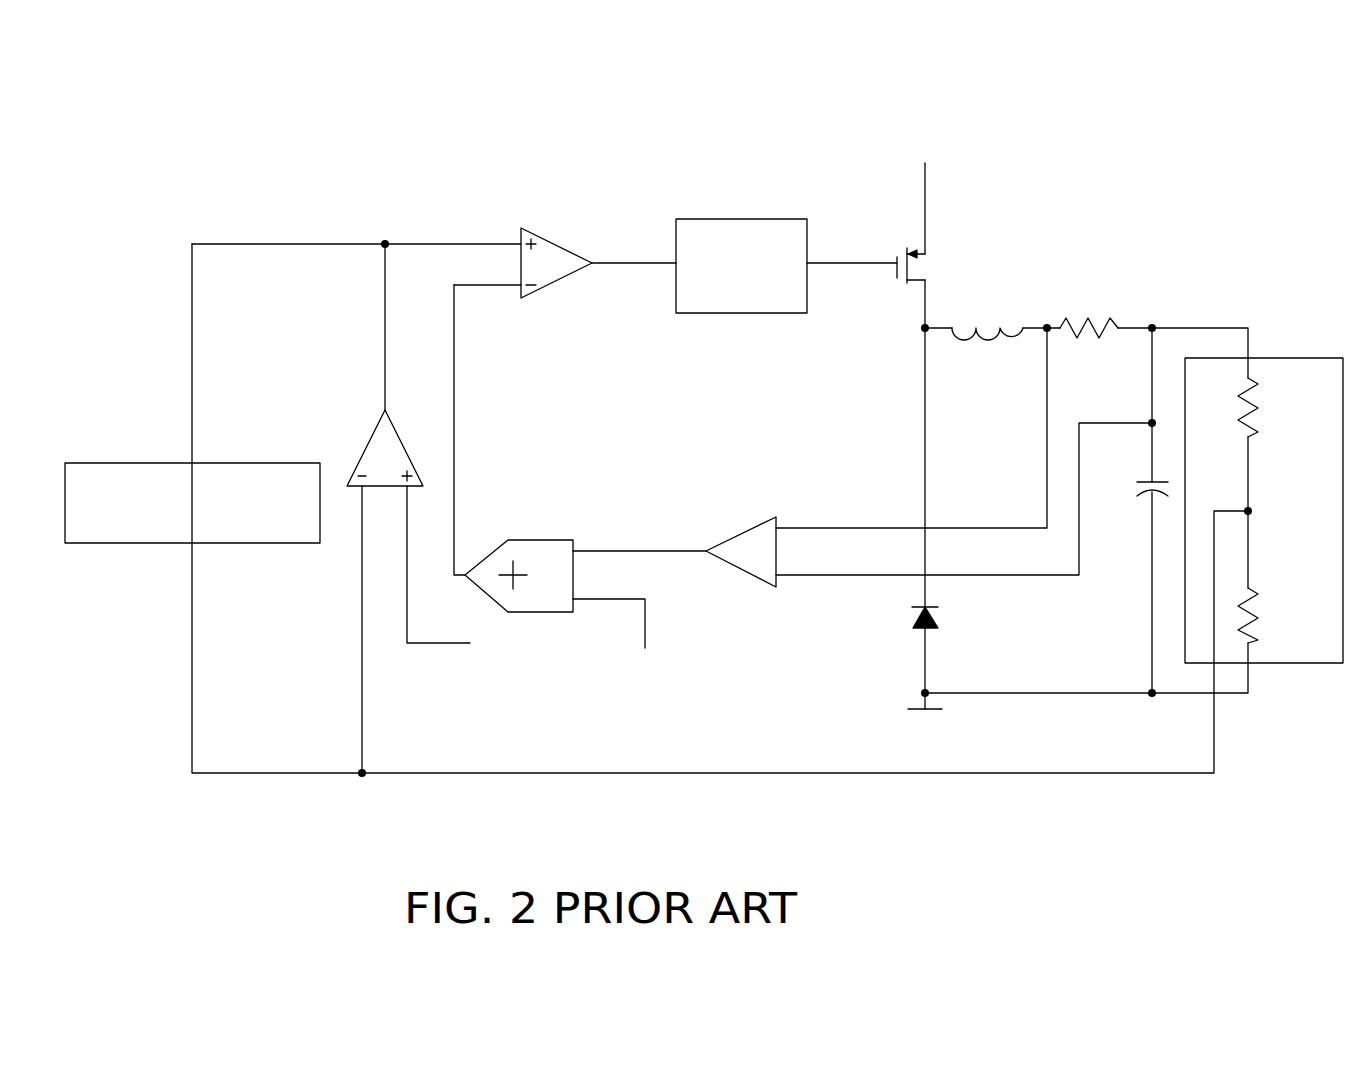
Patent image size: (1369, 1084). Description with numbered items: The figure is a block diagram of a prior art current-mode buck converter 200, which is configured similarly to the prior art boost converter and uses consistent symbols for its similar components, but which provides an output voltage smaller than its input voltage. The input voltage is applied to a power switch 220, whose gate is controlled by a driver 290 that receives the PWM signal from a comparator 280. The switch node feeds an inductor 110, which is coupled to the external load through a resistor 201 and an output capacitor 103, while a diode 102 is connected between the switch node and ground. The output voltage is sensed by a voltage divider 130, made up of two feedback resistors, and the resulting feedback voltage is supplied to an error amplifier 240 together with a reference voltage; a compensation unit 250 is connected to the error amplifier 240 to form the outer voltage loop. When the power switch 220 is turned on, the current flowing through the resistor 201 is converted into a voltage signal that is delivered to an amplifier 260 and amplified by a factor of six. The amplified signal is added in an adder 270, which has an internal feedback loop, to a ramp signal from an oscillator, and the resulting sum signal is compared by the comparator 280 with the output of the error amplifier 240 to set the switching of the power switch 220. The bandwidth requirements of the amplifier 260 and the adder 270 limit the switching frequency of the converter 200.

The current-mode buck converter 200 is at (170, 133).
The compensation unit 250 is at (124, 462).
The error amplifier 240 is at (390, 415).
The comparator 280 is at (541, 231).
The driver 290 is at (808, 240).
The power switch 220 is at (911, 279).
The inductor 110 is at (975, 329).
The resistor 201 is at (1066, 320).
The capacitor 103 is at (1143, 481).
The diode 102 is at (930, 607).
The amplifier 260 is at (762, 518).
The adder with an internal feedback loop 270 is at (545, 540).
The voltage divider 130 is at (1290, 358).